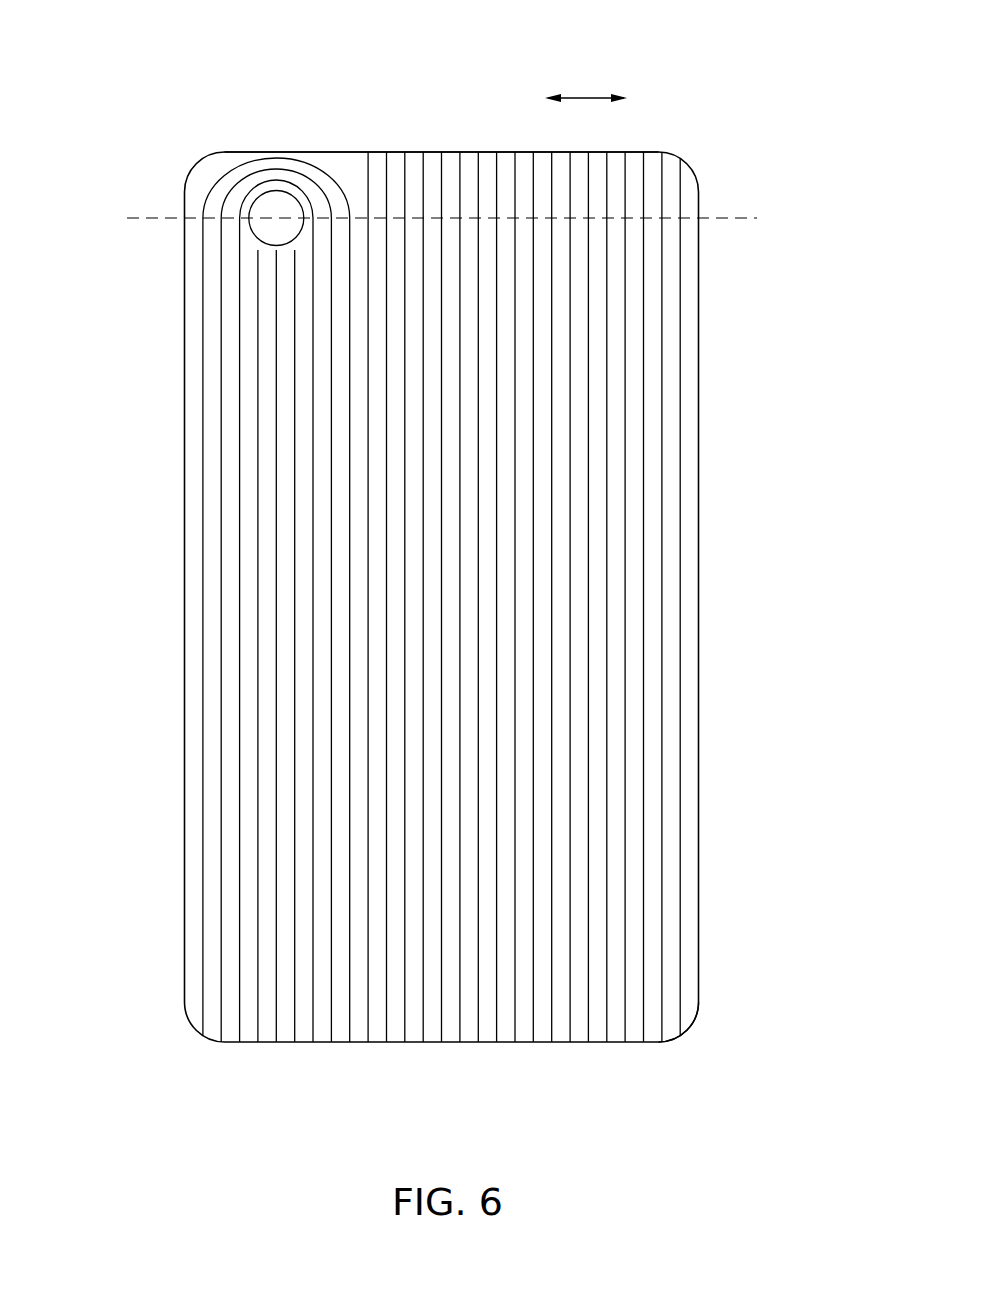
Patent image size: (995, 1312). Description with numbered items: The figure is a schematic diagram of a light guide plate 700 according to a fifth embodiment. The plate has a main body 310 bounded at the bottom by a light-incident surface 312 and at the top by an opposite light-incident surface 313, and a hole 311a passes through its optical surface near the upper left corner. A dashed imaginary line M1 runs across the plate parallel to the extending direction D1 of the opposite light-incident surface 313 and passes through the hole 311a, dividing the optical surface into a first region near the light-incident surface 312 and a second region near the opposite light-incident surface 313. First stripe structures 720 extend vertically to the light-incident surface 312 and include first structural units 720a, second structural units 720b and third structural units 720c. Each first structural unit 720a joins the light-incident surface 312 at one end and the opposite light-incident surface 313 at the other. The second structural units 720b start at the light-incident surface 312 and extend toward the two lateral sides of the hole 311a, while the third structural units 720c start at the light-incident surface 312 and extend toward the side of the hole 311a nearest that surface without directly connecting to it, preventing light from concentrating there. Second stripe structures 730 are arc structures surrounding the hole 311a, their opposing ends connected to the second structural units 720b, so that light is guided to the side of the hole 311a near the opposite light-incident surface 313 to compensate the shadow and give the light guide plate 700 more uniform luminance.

The light guide plate 700 is at (71, 32).
The main body 310 is at (160, 715).
The hole 311a is at (256, 227).
The light-incident surface 312 is at (636, 1042).
The opposite light-incident surface 313 is at (428, 152).
The first stripe structures 720 is at (224, 951).
The first structural units 720a is at (682, 1046).
The second structural units 720b is at (238, 1046).
The third structural units 720c is at (294, 1046).
The second stripe structures 730 is at (274, 158).
The imaginary line M1 is at (722, 215).
The extending direction D1 is at (586, 82).